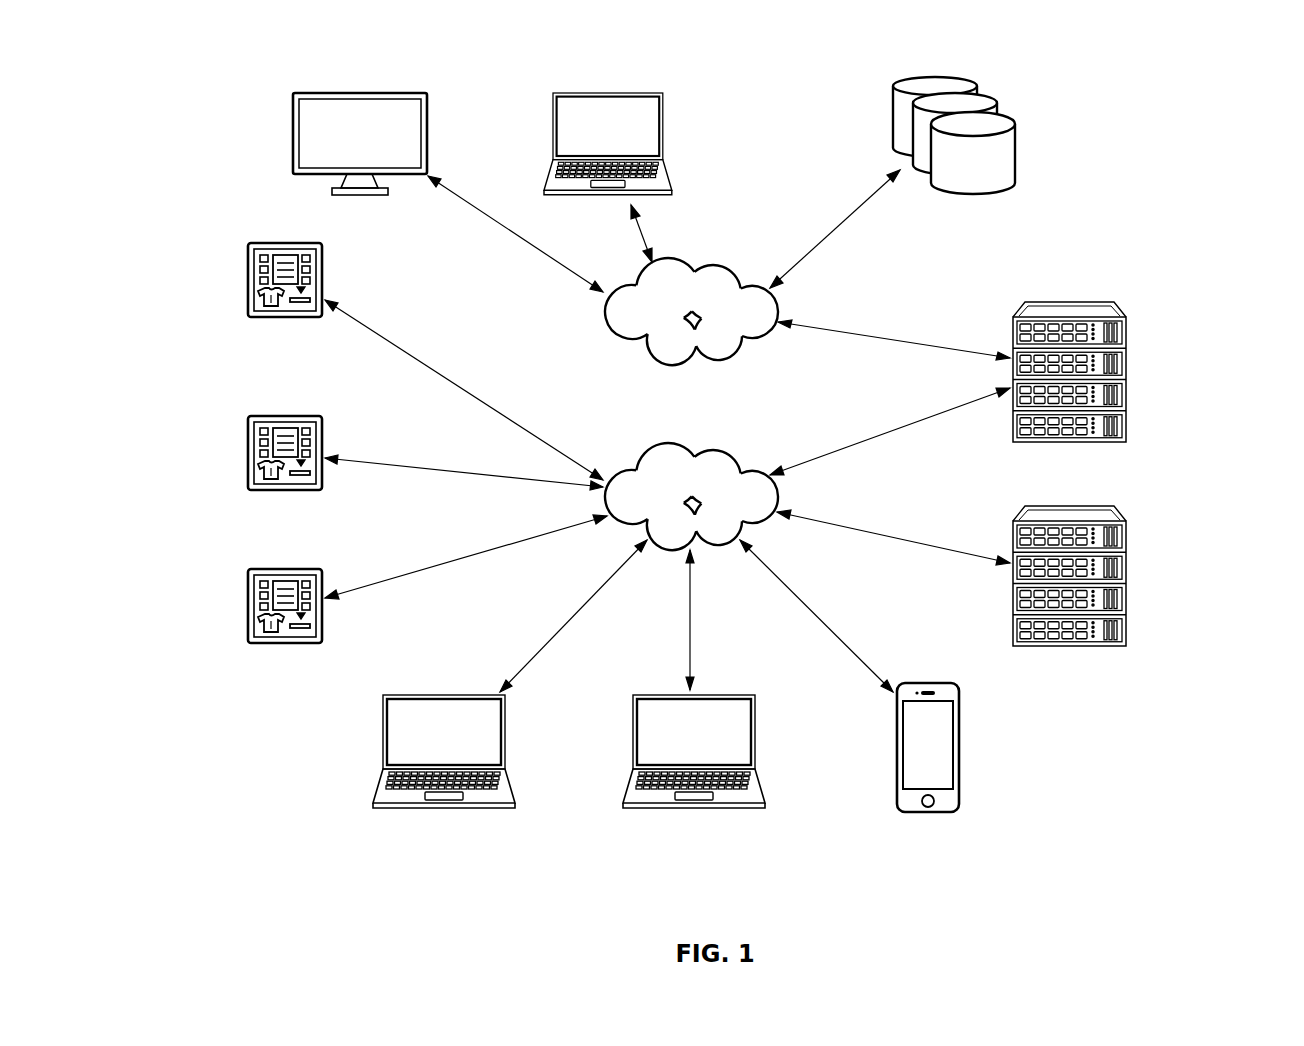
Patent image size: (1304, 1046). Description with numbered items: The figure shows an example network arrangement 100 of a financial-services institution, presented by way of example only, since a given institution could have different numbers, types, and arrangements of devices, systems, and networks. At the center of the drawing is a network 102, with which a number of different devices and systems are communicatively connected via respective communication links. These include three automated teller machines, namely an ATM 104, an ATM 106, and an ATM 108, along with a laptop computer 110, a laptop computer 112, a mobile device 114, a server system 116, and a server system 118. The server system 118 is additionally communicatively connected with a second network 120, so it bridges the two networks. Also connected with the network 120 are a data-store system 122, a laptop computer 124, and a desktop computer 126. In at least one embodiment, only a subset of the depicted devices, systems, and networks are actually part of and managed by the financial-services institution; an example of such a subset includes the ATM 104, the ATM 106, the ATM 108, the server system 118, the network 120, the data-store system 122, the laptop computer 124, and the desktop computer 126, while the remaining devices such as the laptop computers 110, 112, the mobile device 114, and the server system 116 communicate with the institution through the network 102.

The network arrangement 100 is at (1213, 98).
The network 102 is at (673, 510).
The ATM 104 is at (247, 279).
The ATM 106 is at (247, 452).
The ATM 108 is at (247, 605).
The laptop computer 110 is at (437, 812).
The laptop computer 112 is at (687, 812).
The mobile device 114 is at (921, 812).
The server system 116 is at (1127, 582).
The server system 118 is at (1127, 378).
The network 120 is at (673, 325).
The data-store system 122 is at (1018, 150).
The laptop computer 124 is at (551, 147).
The desktop computer 126 is at (292, 143).